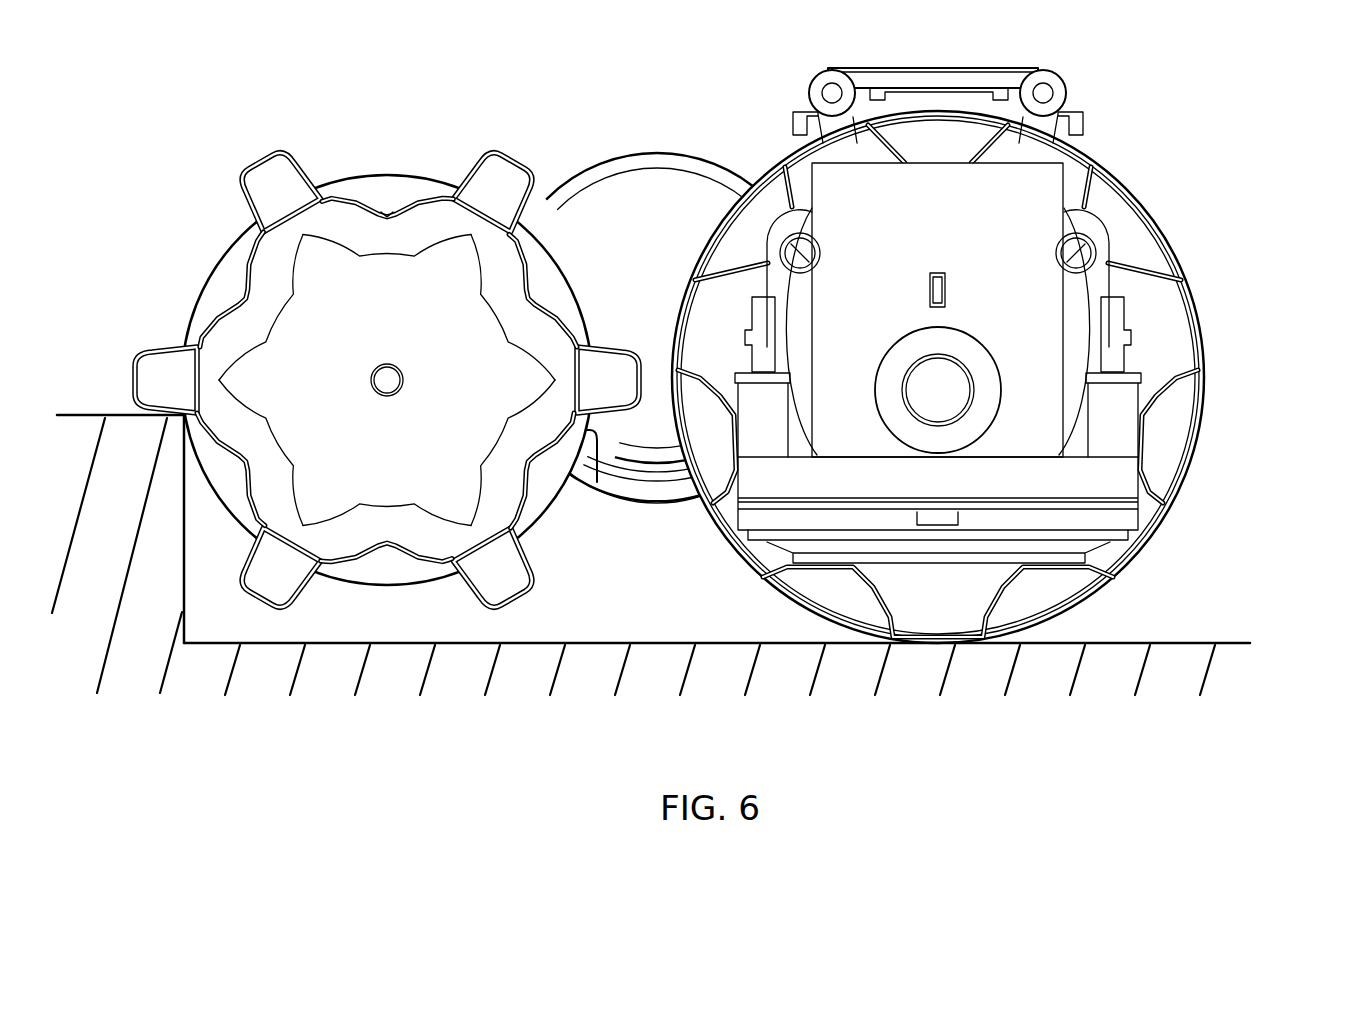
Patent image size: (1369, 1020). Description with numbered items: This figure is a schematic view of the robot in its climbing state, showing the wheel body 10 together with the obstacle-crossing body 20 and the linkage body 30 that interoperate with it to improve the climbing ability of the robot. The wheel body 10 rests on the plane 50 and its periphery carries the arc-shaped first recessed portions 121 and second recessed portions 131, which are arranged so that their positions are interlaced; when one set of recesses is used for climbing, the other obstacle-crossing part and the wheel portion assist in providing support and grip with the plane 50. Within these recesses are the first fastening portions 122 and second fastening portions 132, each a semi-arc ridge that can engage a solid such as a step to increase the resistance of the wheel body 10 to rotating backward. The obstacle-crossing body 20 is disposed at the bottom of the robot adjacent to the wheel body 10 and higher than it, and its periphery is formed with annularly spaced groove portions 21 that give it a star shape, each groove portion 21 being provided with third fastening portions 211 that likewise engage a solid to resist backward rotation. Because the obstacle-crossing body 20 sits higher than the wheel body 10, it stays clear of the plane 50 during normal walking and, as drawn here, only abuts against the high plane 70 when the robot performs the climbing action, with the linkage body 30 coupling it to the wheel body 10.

The wheel body 10 is at (1011, 355).
The obstacle-crossing body 20 is at (387, 338).
The groove portion 21 is at (384, 184).
The third fastening portion 211 is at (387, 212).
The linkage body 30 is at (653, 150).
The plane 50 is at (1190, 643).
The high plane 70 is at (87, 408).
The first recessed portion 121 is at (1238, 436).
The second recessed portion 131 is at (1150, 412).
The first fastening portion 122 is at (1229, 257).
The second fastening portion 132 is at (1130, 270).